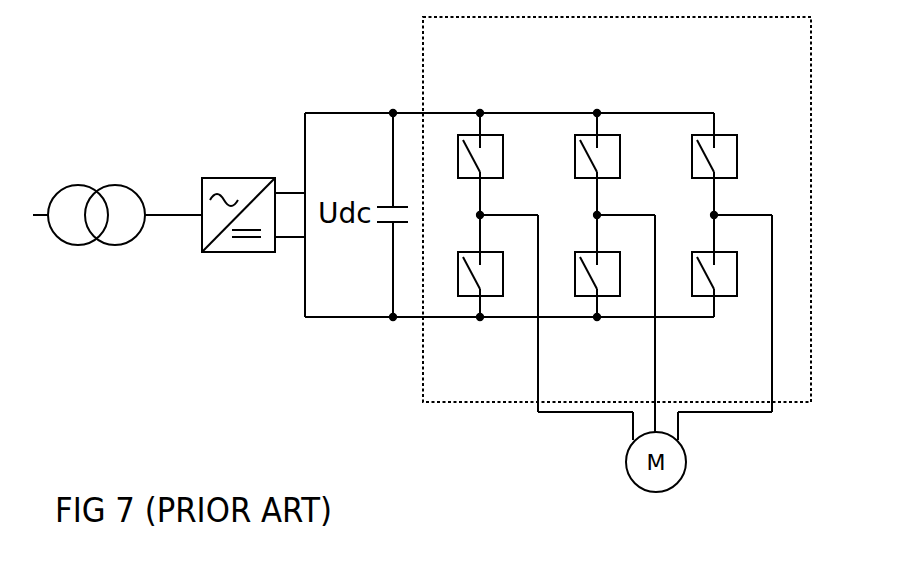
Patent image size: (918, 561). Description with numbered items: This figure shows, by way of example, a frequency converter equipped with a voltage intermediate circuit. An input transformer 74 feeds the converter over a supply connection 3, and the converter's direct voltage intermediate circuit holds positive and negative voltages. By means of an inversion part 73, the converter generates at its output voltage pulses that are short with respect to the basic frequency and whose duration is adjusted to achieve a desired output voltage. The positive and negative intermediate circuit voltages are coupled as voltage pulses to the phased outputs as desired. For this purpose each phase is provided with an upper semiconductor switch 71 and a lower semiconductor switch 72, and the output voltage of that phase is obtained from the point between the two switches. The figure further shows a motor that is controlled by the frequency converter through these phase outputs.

The AC supply line 3 is at (174, 222).
The upper semiconductor switch 71 is at (495, 137).
The lower semiconductor switch 72 is at (500, 297).
The inversion part 73 is at (458, 402).
The input transformer 74 is at (110, 245).